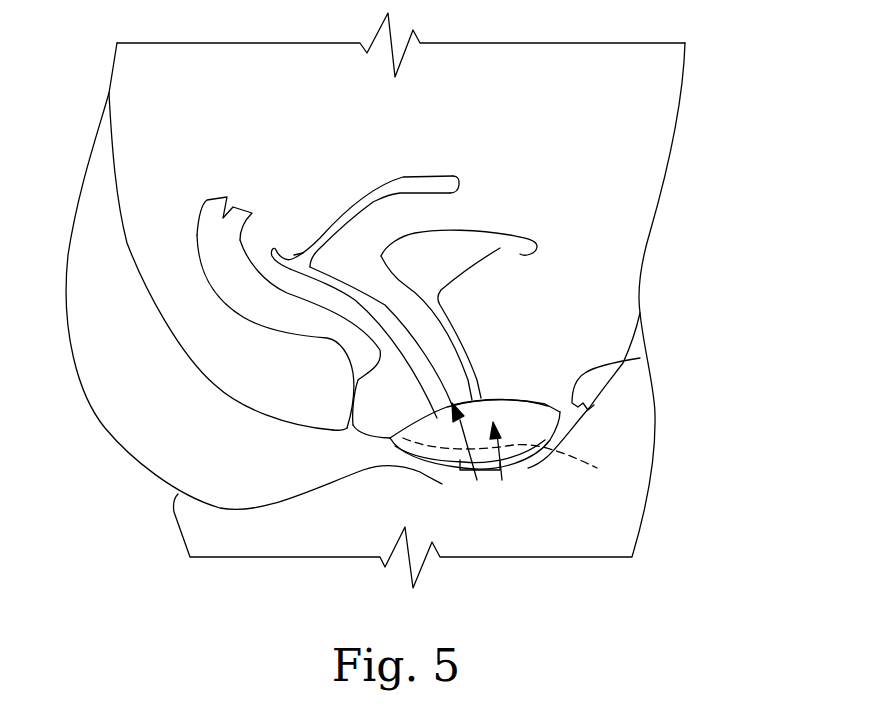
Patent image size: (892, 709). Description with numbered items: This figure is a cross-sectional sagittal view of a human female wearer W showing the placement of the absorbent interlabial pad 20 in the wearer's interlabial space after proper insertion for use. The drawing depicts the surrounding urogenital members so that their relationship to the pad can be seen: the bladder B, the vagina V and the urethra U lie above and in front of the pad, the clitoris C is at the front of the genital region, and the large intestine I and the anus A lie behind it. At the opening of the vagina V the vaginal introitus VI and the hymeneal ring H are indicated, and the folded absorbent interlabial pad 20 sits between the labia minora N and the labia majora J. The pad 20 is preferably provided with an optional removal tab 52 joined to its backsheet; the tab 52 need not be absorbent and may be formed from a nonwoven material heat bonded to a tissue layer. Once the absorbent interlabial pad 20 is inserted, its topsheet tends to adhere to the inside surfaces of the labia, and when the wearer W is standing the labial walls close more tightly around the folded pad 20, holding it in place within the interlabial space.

The wearer W is at (658, 113).
The bladder B is at (540, 254).
The vagina V is at (423, 348).
The urethra U is at (467, 357).
The clitoris C is at (640, 358).
The large intestine I is at (243, 287).
The anus A is at (341, 432).
The removal tab 52 is at (437, 470).
The absorbent interlabial pad 20 is at (510, 470).
The vaginal introitus VI is at (477, 480).
The hymeneal ring H is at (502, 480).
The labia majora J is at (517, 470).
The labia minora N is at (509, 462).